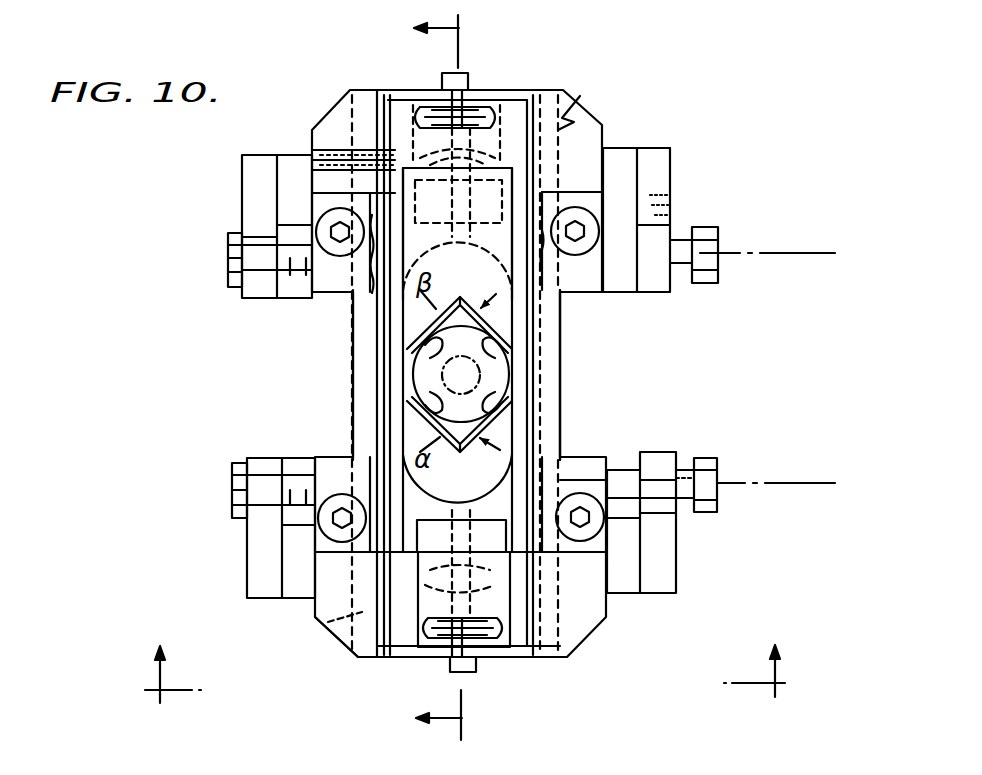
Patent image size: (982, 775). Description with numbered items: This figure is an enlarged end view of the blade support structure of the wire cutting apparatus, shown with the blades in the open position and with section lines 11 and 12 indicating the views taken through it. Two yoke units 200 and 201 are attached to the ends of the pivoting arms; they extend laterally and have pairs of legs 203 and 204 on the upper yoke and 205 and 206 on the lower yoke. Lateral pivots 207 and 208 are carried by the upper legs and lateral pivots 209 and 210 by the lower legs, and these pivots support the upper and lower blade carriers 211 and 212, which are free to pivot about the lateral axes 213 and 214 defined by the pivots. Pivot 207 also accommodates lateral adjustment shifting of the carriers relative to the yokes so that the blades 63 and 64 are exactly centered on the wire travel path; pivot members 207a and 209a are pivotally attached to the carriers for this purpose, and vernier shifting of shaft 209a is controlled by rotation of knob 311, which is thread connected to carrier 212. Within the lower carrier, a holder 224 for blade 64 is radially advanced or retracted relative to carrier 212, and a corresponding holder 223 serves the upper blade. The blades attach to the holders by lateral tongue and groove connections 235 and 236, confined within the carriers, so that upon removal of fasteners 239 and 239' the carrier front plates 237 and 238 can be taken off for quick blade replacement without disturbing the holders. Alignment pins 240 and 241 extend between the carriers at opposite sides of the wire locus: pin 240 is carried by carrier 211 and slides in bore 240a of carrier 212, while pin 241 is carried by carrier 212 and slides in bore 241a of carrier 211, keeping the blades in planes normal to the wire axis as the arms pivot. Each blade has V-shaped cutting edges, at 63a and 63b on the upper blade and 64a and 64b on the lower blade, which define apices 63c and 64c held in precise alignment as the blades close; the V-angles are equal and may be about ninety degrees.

The section line 11- 11 is at (465, 669).
The section line 12- 12 is at (460, 375).
The blade 63 is at (503, 306).
The cutting edge 63a is at (407, 347).
The cutting edge 63b is at (503, 347).
The apex 63c is at (462, 296).
The blade 64 is at (505, 421).
The cutting edge 64a is at (407, 401).
The cutting edge 64b is at (500, 380).
The apex 64c is at (462, 454).
The yoke unit 200 is at (652, 140).
The yoke unit 201 is at (690, 565).
The leg 203 is at (248, 170).
The leg 204 is at (660, 164).
The leg 205 is at (262, 580).
The leg 206 is at (657, 582).
The lateral pivot 207 is at (232, 270).
The pivot member 207a is at (292, 278).
The lateral pivot 208 is at (683, 240).
The lateral pivot 209 is at (233, 495).
The pivot member 209a is at (297, 470).
The lateral pivot 210 is at (690, 468).
The upper blade carrier 211 is at (322, 100).
The lower blade carrier 212 is at (340, 652).
The lateral axis 213 is at (808, 255).
The lateral axis 214 is at (808, 483).
The upper spring-loaded plunger 223 is at (397, 100).
The holder 224 is at (430, 607).
The tongue and groove connection 235 is at (493, 96).
The tongue and groove connection 236 is at (485, 632).
The carrier front plate 237 is at (335, 195).
The carrier front plate 238 is at (600, 470).
The fastener 239 is at (386, 237).
The fastener 239' is at (389, 510).
The pin 240 is at (352, 368).
The bore 240a is at (328, 622).
The pin 241 is at (565, 363).
The bore 241a is at (580, 96).
The knob 311 is at (720, 497).